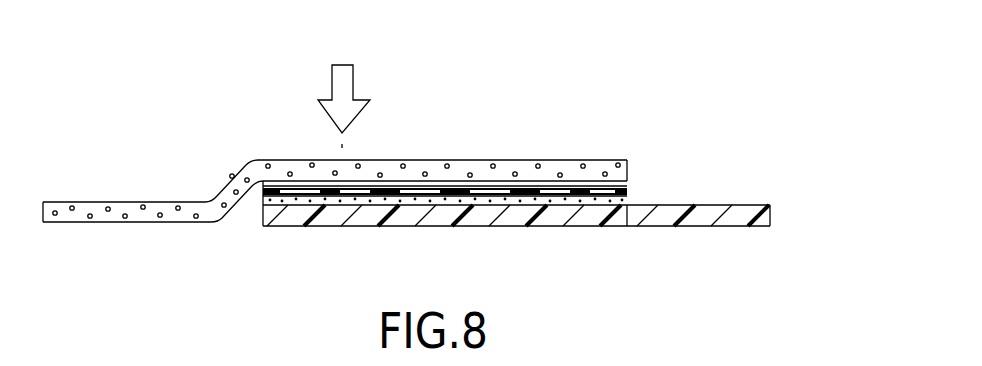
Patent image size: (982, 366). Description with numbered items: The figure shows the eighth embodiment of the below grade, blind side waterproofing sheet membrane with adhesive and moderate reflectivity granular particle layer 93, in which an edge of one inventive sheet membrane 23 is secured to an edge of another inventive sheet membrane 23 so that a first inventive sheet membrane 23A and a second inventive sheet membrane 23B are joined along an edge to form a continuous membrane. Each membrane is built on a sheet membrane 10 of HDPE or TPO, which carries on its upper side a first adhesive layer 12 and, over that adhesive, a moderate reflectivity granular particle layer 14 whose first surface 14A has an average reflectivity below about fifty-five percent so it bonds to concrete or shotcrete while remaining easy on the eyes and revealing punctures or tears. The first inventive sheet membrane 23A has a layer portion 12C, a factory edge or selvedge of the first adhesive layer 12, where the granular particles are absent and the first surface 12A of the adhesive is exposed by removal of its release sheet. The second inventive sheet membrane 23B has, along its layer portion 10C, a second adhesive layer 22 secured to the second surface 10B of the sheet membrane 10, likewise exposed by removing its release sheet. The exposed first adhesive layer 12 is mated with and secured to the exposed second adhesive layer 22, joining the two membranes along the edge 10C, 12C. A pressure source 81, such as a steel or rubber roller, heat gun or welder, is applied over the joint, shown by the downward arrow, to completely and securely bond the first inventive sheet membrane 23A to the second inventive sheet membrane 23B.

The sheet membrane 10 is at (127, 223).
The second surface of sheet membrane 10B is at (167, 223).
The layer portion of membrane 10C is at (442, 188).
The first adhesive layer 12 is at (628, 199).
The first surface of first adhesive layer 12A is at (532, 228).
The layer portion of first adhesive layer 12C is at (468, 198).
The moderate reflectivity granular particle layer 14 is at (152, 202).
The first surface of granular particle layer 14A is at (118, 202).
The second adhesive layer 22 is at (628, 196).
The inventive sheet membrane 23 is at (55, 198).
The first inventive sheet membrane 23A is at (757, 228).
The second inventive sheet membrane 23B is at (100, 200).
The pressure source 81 is at (345, 88).
The eighth embodiment waterproofing sheet membrane 93 is at (590, 80).